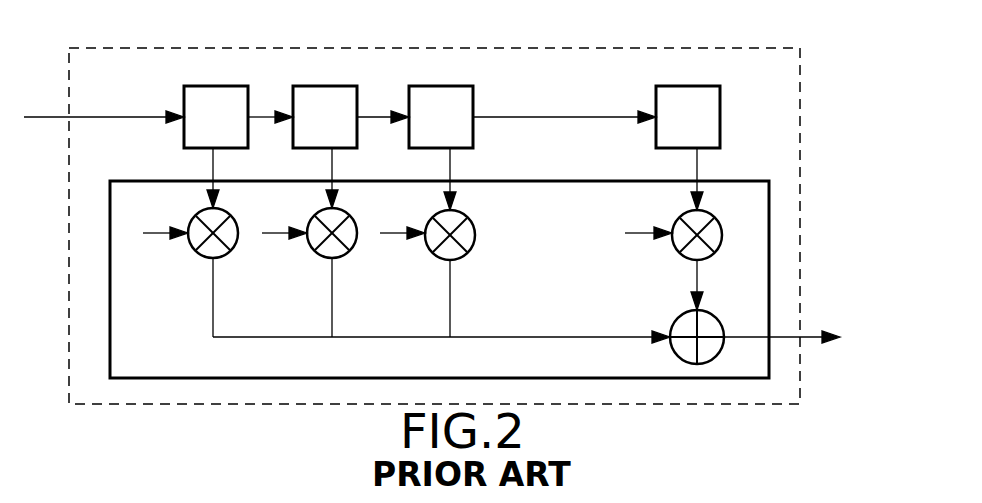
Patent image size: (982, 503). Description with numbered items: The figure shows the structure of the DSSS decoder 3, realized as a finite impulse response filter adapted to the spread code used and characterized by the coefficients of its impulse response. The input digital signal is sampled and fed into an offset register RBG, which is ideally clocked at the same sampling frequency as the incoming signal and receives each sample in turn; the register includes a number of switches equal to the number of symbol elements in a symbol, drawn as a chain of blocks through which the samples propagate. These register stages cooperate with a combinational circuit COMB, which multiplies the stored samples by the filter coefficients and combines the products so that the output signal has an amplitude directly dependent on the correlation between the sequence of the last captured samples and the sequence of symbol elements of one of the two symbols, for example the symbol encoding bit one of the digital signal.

The DSSS decoder 3 is at (392, 48).
The offset register RBG is at (488, 104).
The combinational circuit COMB is at (770, 270).